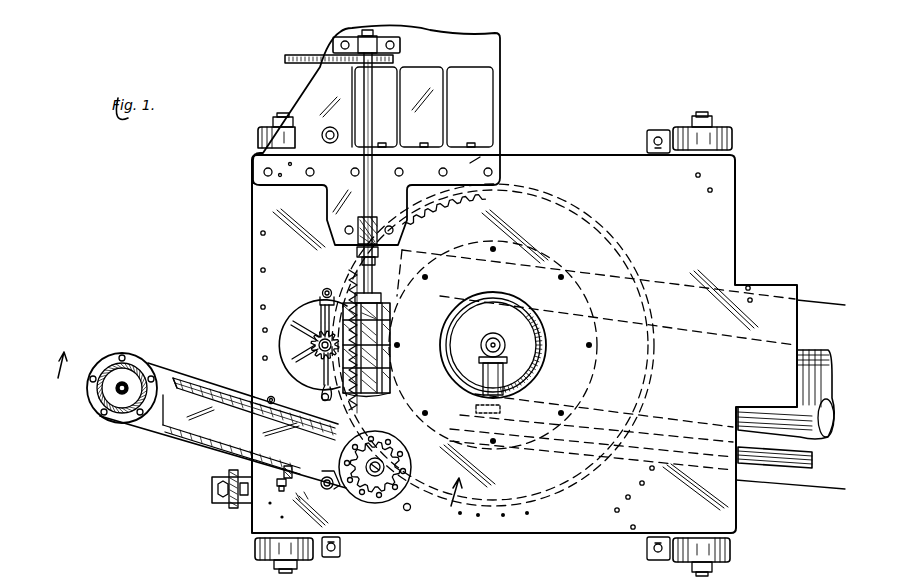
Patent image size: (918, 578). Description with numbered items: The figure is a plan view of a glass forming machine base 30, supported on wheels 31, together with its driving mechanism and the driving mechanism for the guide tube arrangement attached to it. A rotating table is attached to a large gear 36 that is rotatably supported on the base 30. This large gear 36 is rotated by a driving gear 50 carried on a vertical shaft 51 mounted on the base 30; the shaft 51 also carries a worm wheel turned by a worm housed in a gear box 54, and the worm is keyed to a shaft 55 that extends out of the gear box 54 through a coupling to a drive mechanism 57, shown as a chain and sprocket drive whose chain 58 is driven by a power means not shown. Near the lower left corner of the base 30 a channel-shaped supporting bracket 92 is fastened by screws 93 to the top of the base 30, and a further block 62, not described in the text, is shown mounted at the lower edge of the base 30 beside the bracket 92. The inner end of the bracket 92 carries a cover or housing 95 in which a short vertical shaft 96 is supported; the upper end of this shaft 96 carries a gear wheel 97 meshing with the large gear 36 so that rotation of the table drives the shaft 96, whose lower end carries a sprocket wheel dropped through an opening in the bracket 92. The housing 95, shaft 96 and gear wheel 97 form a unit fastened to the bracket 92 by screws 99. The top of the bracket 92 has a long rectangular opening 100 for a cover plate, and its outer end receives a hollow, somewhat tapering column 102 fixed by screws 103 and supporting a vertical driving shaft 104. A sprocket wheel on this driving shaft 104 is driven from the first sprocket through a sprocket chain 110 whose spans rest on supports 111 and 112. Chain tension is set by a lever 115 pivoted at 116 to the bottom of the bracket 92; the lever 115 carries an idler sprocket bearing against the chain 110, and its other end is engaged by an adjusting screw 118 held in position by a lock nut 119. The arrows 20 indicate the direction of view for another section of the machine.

The direction arrows / section line 20 is at (255, 438).
The base 30 is at (577, 162).
The wheels 31 is at (733, 133).
The large gear 36 is at (346, 280).
The driving gear 50 is at (278, 337).
The shaft 51 is at (321, 293).
The gear box 54 is at (398, 323).
The shaft 55 is at (378, 283).
The drive mechanism 57 is at (405, 51).
The chain 58 is at (284, 56).
The stop block 62 is at (233, 517).
The supporting bracket 92 is at (330, 490).
The screws 93 is at (288, 397).
The cover or housing 95 is at (388, 458).
The short vertical shaft 96 is at (379, 463).
The gear wheel 97 is at (363, 437).
The screws 99 is at (408, 455).
The long rectangular opening 100 is at (148, 379).
The hollow tapering column 102 is at (133, 363).
The screws 103 is at (128, 353).
The vertical driving shaft 104 is at (120, 395).
The sprocket chain 110 is at (245, 390).
The support 111 is at (196, 438).
The support 112 is at (210, 382).
The lever 115 is at (299, 512).
The pivot 116 is at (322, 470).
The adjusting screw 118 is at (281, 494).
The lock nut 119 is at (292, 482).